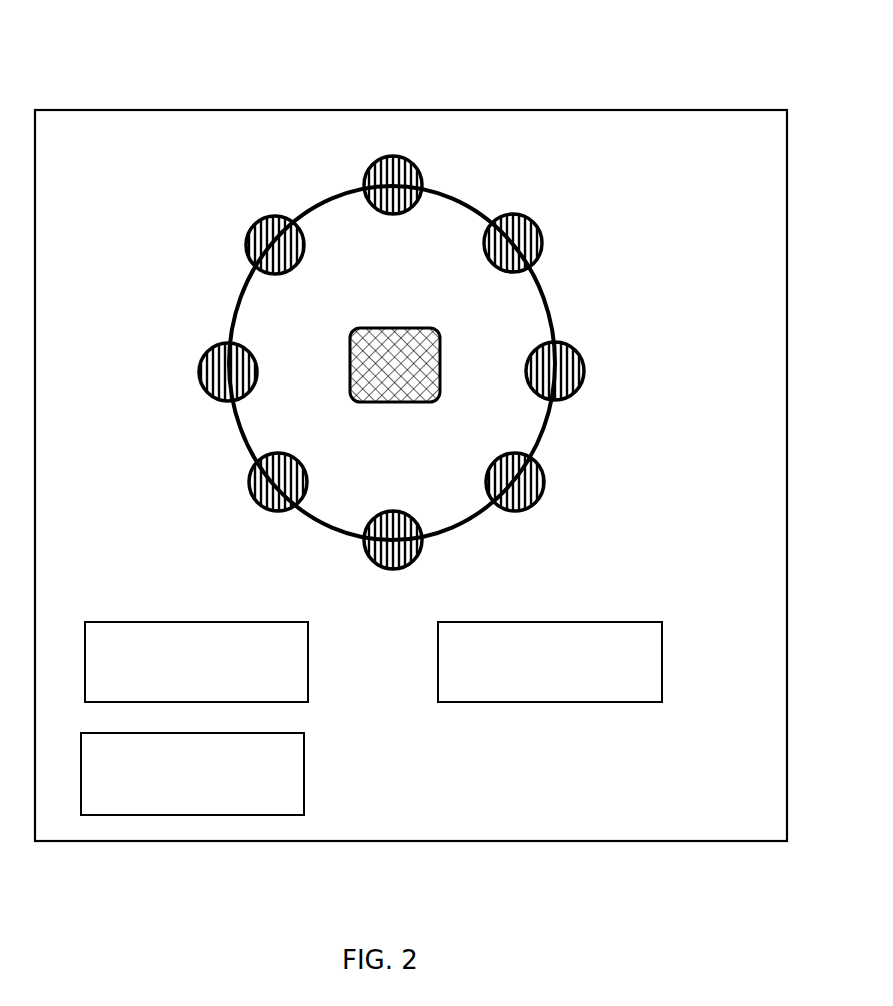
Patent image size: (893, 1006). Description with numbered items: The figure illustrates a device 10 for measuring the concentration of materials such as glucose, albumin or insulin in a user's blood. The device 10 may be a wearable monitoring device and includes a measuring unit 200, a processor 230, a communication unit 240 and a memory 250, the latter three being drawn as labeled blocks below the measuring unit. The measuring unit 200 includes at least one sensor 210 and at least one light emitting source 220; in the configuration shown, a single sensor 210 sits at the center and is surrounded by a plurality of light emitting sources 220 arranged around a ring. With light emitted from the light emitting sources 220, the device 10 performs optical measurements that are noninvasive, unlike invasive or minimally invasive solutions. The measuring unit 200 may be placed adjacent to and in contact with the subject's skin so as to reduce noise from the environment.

The device 10 is at (183, 111).
The measuring unit 200 is at (180, 243).
The sensor 210 is at (443, 375).
The light emitting source 220 is at (261, 216).
The processor 230 is at (308, 662).
The communication unit 240 is at (304, 775).
The memory 250 is at (662, 664).